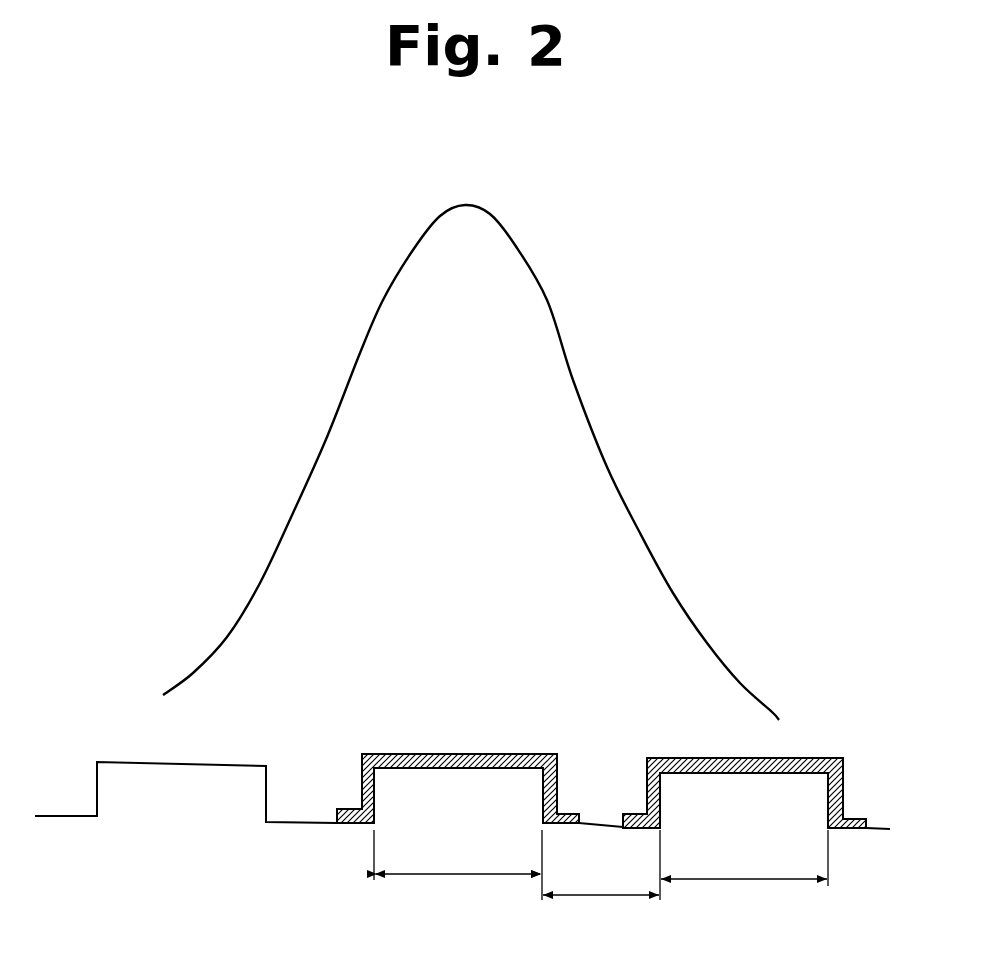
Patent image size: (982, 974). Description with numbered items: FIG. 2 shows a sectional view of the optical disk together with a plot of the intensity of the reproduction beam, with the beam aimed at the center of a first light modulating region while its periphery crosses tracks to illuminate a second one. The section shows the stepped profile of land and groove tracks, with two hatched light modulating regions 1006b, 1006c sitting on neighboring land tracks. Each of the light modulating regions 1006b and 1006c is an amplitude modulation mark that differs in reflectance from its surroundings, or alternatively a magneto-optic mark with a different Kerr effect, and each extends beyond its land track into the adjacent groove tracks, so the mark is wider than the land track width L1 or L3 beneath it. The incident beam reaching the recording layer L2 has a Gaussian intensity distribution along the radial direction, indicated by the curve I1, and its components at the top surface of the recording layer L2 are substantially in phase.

The intensity distribution I1 is at (558, 323).
The light modulating region 1006b is at (468, 755).
The light modulating region 1006c is at (777, 760).
The width of the land track L1 is at (455, 877).
The recording layer L2 is at (602, 898).
The width of the land track L3 is at (750, 880).